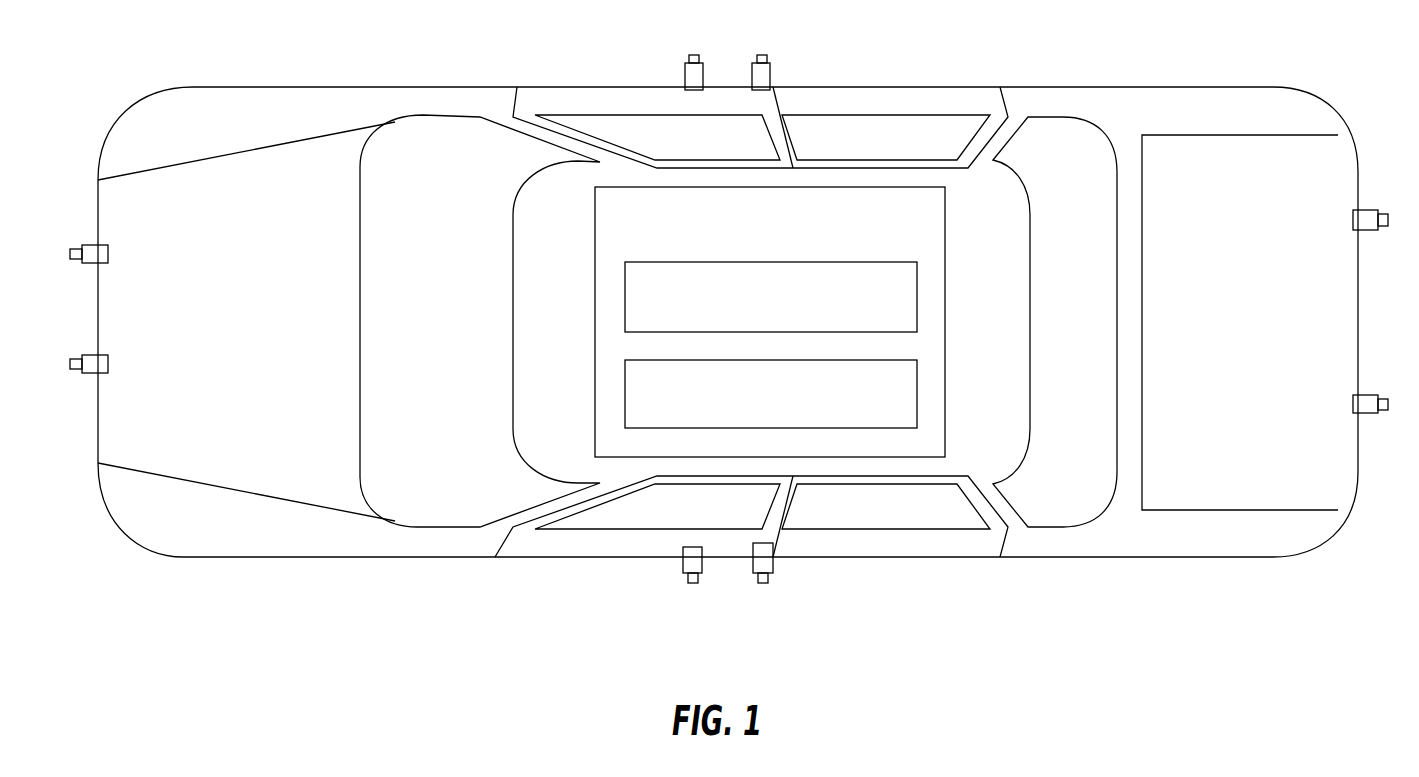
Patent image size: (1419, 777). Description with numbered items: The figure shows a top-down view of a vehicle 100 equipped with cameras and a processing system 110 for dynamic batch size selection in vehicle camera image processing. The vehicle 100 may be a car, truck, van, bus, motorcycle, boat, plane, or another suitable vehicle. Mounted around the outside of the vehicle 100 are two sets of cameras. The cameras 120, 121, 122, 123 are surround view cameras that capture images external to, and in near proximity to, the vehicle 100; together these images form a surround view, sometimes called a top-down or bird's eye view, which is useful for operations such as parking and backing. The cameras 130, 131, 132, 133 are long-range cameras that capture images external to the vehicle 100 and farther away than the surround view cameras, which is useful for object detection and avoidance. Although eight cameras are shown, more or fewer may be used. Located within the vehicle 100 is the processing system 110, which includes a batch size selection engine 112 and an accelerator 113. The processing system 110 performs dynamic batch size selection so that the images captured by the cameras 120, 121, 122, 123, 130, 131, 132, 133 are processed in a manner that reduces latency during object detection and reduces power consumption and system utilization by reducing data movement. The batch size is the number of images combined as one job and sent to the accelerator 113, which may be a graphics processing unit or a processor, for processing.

The vehicle 100 is at (248, 87).
The processing system 110 is at (787, 221).
The batch size selection engine 112 is at (787, 307).
The accelerator 113 is at (787, 406).
The camera 120 is at (87, 245).
The camera 121 is at (693, 583).
The camera 122 is at (693, 55).
The camera 123 is at (1362, 230).
The camera 130 is at (87, 355).
The camera 131 is at (764, 583).
The camera 132 is at (757, 55).
The camera 133 is at (1363, 413).